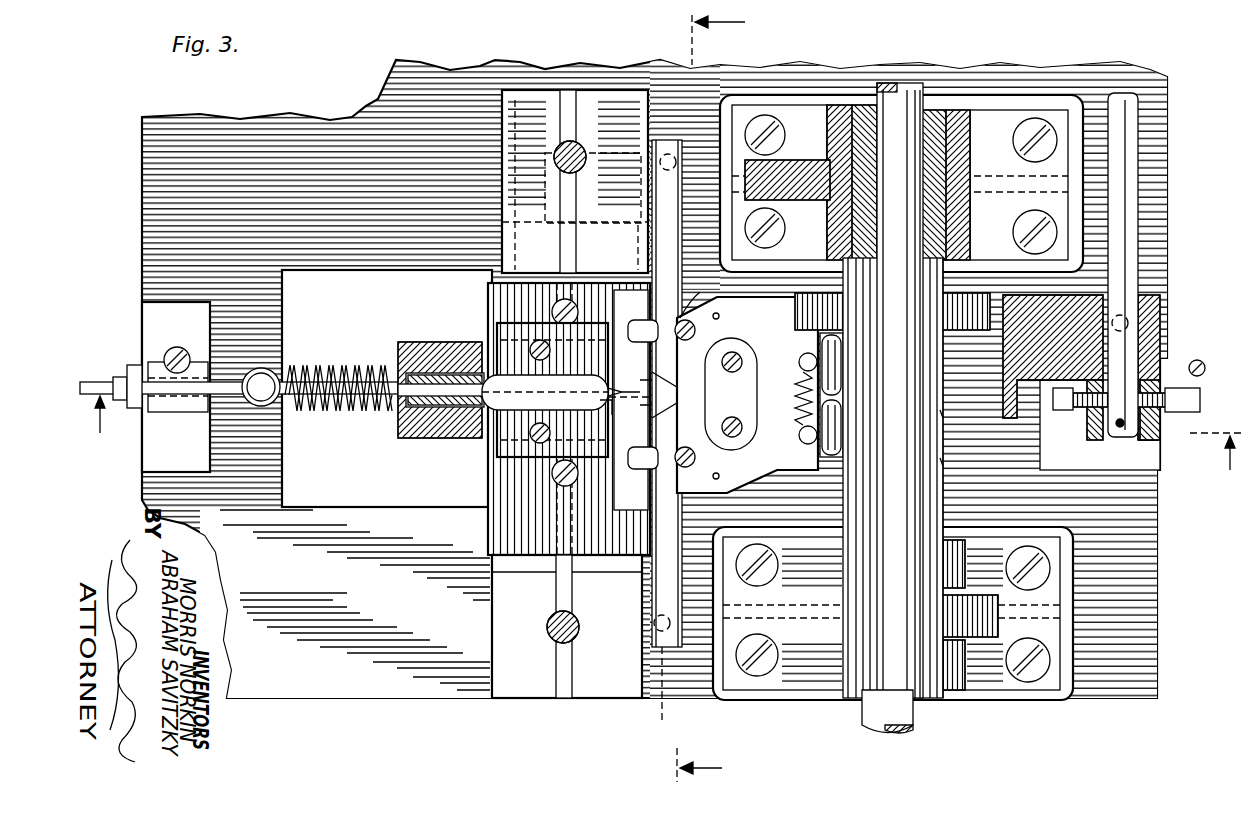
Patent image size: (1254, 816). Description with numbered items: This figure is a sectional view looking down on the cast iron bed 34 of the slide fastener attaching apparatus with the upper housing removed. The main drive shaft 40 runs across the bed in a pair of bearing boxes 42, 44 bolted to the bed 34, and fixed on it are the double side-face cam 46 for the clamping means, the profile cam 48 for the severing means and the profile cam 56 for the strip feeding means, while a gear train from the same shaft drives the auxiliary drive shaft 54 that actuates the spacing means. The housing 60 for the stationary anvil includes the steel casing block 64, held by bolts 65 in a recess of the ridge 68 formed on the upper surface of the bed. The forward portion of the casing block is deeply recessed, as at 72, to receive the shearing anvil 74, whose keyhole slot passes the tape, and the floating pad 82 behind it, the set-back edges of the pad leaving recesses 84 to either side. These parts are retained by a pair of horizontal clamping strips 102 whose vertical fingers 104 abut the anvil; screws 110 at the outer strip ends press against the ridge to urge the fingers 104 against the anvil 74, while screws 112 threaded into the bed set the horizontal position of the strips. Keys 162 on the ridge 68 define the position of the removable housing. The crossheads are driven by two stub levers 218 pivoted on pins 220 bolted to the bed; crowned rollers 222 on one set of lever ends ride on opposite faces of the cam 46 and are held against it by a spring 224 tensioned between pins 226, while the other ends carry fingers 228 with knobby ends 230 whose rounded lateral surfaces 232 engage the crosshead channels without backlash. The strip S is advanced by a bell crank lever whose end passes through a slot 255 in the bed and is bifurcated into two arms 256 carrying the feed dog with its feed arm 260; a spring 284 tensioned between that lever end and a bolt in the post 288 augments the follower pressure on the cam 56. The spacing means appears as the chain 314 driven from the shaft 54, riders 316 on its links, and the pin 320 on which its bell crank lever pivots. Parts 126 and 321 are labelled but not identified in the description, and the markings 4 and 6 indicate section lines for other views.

The cast iron bed 34 is at (165, 198).
The main drive shaft 40 is at (915, 725).
The bearing box 42 is at (790, 700).
The bearing box 44 is at (998, 128).
The double side-face cam 46 is at (940, 415).
The profile cam 48 is at (892, 311).
The auxiliary drive shaft 54 is at (1130, 240).
The profile cam 56 is at (958, 268).
The housing for the stationary anvil 60 is at (486, 477).
The steel casing block 64 is at (520, 495).
The bolts 65 is at (560, 306).
The ridge 68 is at (510, 640).
The recess 72 is at (600, 372).
The shearing anvil 74 is at (645, 378).
The floating pad 82 is at (600, 405).
The recesses 84 is at (600, 383).
The horizontal clamping strips 102 is at (656, 585).
The vertical fingers 104 is at (665, 378).
The screws 110 is at (672, 636).
The screws 112 is at (678, 692).
The pivot pin 126 is at (553, 153).
The keys 162 is at (555, 580).
The stub levers 218 is at (762, 315).
The pins 220 is at (742, 362).
The crowned rollers 222 is at (845, 365).
The spring 224 is at (800, 408).
The pins 226 is at (803, 362).
The fingers 228 is at (680, 318).
The knobby ends 230 is at (640, 320).
The lateral surfaces 232 is at (635, 468).
The slot 255 is at (404, 276).
The arms 256 is at (446, 342).
The feed arm 260 is at (520, 391).
The spring 284 is at (318, 364).
The post 288 is at (150, 322).
The chain 314 is at (1132, 438).
The riders 316 is at (1080, 412).
The pin 320 is at (1200, 402).
The block 321 is at (1140, 322).
The strip S is at (100, 380).
The section line 4- 4 is at (669, 450).
The section line 6- 6 is at (723, 396).